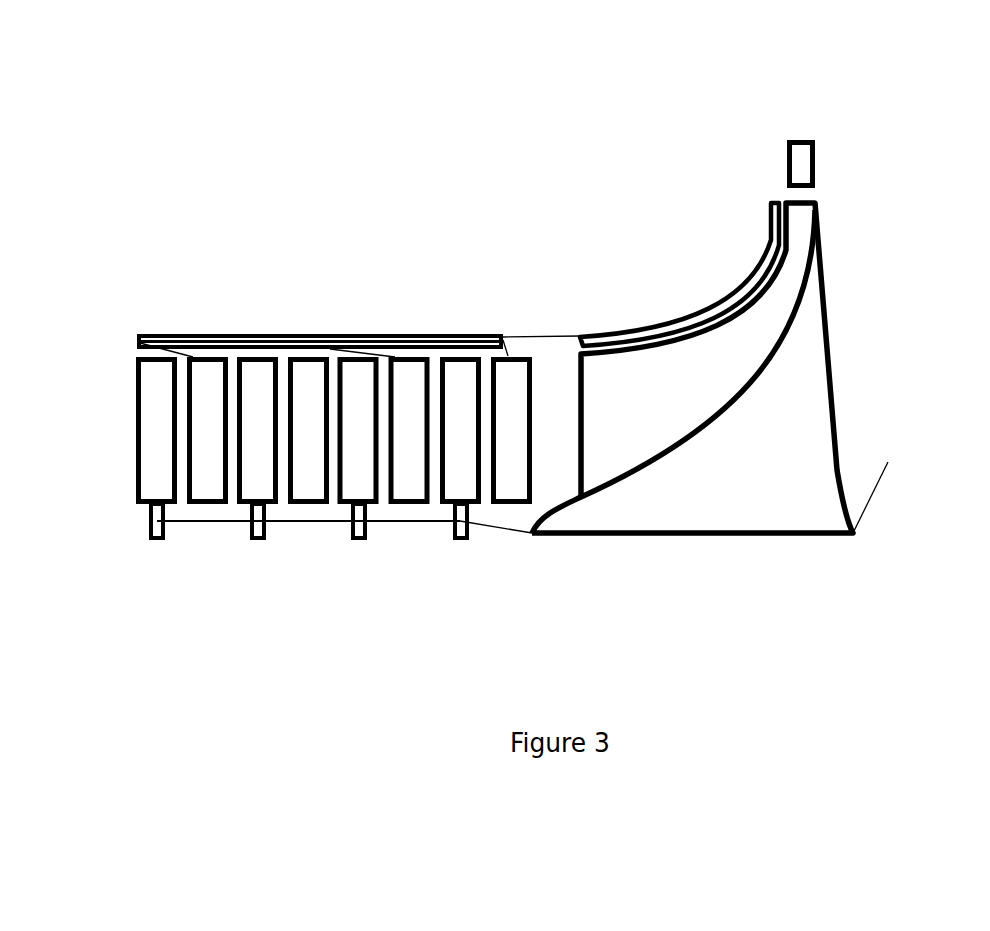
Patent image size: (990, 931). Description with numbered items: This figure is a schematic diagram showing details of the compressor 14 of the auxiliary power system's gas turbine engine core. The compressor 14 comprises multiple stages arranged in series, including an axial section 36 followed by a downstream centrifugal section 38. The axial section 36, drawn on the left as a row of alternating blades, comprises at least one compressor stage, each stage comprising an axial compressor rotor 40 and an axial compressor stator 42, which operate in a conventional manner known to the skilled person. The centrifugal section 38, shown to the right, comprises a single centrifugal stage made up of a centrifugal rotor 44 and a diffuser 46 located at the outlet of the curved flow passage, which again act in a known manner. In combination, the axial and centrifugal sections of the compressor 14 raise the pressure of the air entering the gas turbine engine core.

The compressor 14 is at (500, 213).
The axial section 36 is at (356, 295).
The centrifugal section 38 is at (676, 268).
The axial compressor rotor 40 is at (156, 357).
The axial compressor stator 42 is at (203, 357).
The centrifugal rotor 44 is at (692, 485).
The diffuser 46 is at (800, 140).